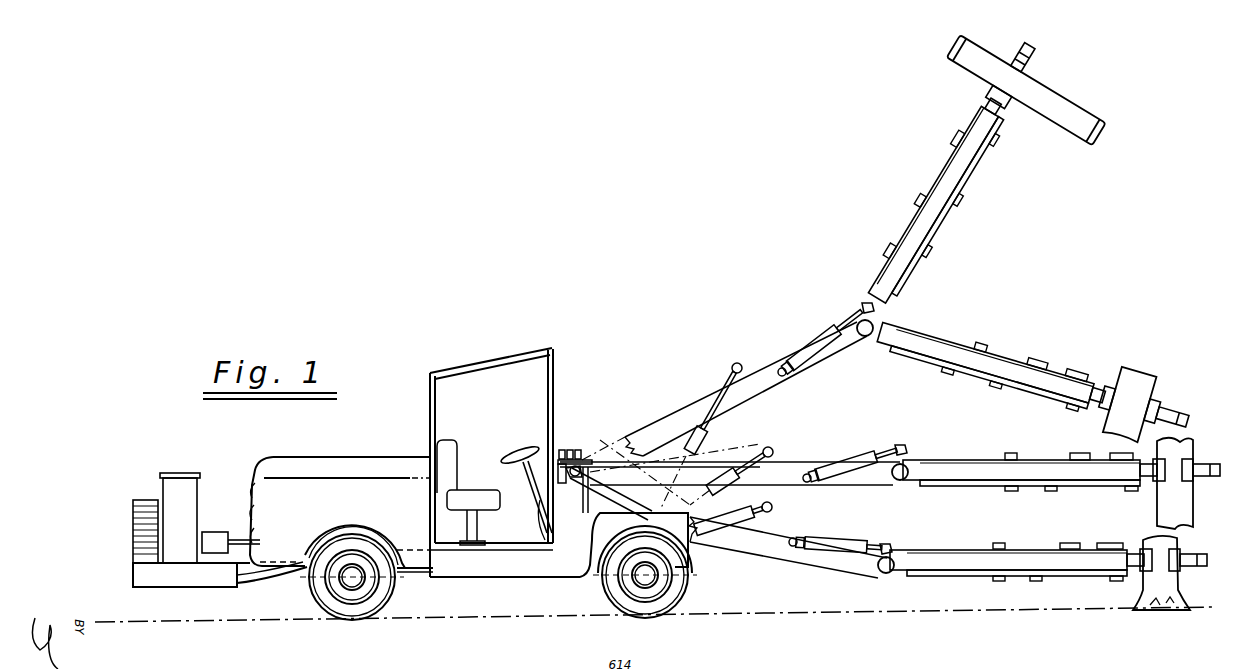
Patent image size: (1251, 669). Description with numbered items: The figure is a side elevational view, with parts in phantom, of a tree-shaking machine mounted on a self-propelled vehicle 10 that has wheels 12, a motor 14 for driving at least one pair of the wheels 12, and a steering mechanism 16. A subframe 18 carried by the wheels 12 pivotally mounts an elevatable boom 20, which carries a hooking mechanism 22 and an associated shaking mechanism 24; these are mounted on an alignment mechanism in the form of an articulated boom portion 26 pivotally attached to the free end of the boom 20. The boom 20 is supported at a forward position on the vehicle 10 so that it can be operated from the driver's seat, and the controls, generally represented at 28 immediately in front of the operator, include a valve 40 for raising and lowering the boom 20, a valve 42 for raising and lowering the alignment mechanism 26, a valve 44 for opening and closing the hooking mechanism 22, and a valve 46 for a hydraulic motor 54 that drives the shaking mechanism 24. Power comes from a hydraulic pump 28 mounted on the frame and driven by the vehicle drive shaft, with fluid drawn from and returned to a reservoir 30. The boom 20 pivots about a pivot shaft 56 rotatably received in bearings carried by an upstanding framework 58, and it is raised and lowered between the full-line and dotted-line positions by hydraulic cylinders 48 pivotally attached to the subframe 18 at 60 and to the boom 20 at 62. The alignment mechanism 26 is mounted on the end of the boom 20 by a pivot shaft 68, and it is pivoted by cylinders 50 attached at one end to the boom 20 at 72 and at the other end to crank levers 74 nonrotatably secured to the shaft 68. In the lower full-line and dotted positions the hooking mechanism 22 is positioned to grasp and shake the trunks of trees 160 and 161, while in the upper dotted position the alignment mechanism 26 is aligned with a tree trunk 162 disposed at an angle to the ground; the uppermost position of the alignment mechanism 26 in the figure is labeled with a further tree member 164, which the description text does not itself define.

The self-propelled vehicle 10 is at (422, 374).
The wheels 12 is at (397, 596).
The motor 14 is at (318, 470).
The steering mechanism 16 is at (531, 452).
The subframe 18 is at (233, 588).
The elevatable boom 20 is at (674, 404).
The hooking mechanism 22 is at (1040, 74).
The shaking mechanism 24 is at (933, 164).
The articulated boom portion 26 is at (900, 263).
The hydraulic pump 28 is at (232, 530).
The reservoir 30 is at (196, 497).
The valve 40 is at (584, 458).
The valve 42 is at (578, 450).
The valve 44 is at (569, 450).
The valve 46 is at (562, 450).
The hydraulic cylinders 48 is at (700, 440).
The cylinders 50 is at (800, 345).
The hydraulic motor 54 is at (957, 200).
The pivot shaft 56 is at (540, 501).
The upstanding framework 58 is at (562, 540).
The pivotal attachment of cylinders to subframe 60 is at (680, 580).
The pivotal attachment of cylinders to boom 62 is at (742, 363).
The pivot shaft 68 is at (864, 338).
The pivotal attachment of cylinders to boom 72 is at (784, 378).
The crank levers 74 is at (873, 309).
The tree 160 is at (1143, 590).
The tree 161 is at (1155, 503).
The tree trunk 162 is at (1151, 360).
The pipe section 164 is at (1057, 137).